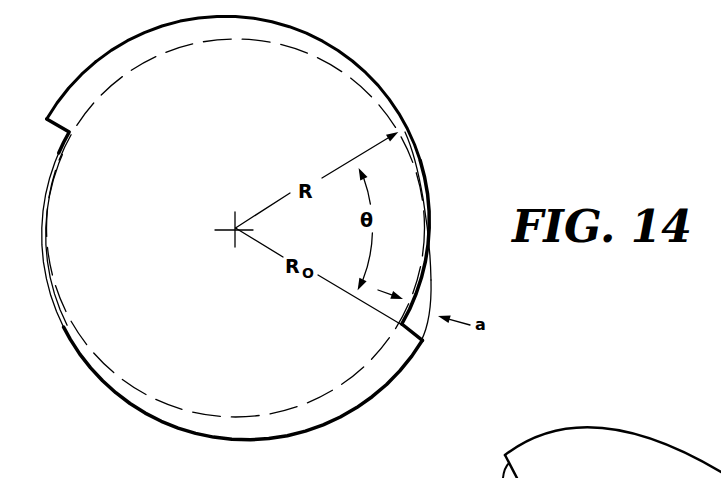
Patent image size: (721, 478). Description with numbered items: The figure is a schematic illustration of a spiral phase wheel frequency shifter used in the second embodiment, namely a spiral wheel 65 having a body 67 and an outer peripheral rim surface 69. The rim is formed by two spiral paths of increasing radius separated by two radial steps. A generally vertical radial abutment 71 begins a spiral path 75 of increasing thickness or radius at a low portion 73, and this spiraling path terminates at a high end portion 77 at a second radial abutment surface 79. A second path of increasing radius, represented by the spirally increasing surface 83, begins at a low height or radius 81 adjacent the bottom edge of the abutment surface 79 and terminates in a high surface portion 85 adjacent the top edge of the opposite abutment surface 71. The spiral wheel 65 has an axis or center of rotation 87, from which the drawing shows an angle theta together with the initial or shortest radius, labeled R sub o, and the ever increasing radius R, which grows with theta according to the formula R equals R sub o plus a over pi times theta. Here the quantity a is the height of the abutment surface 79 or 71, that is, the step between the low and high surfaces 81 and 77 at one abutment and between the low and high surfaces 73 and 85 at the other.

The spiral wheel 65 is at (249, 232).
The body 67 is at (365, 114).
The outer peripheral rim surface 69 is at (440, 236).
The radial abutment 71 is at (55, 128).
The low portion 73 is at (55, 162).
The spiral path 75 is at (172, 414).
The high end portion 77 is at (400, 372).
The second radial abutment surface 79 is at (424, 324).
The low height or radius 81 is at (415, 312).
The spirally increasing surface 83 is at (362, 73).
The high surface portion 85 is at (58, 100).
The axis or center of rotation 87 is at (232, 227).